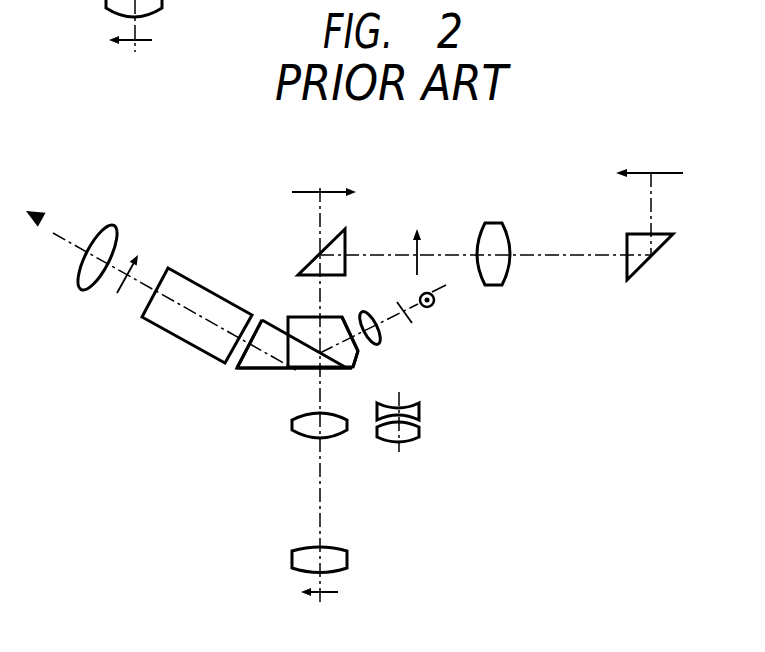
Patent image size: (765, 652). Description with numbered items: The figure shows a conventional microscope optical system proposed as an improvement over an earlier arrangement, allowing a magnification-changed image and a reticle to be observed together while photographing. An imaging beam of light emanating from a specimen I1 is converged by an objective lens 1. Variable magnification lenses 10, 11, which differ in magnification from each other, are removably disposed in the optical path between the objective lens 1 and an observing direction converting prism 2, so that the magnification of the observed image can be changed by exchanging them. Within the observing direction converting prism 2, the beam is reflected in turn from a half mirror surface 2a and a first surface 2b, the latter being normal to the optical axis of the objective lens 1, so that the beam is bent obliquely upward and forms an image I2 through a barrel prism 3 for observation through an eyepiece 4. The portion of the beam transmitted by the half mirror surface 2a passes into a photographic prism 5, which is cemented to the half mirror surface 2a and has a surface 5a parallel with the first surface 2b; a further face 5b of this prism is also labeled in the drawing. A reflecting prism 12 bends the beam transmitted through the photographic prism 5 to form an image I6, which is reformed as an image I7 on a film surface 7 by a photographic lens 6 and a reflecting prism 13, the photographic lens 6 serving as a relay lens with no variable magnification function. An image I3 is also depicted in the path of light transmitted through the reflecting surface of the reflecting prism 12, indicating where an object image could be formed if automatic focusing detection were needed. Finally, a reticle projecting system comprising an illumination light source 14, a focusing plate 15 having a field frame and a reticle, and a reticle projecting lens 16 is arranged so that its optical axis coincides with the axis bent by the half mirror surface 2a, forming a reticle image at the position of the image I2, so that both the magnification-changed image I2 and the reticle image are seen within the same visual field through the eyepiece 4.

The objective lens 1 is at (332, 547).
The observing direction converting prism 2 is at (273, 372).
The half mirror surface 2a is at (353, 371).
The first surface 2b is at (278, 372).
The barrel prism 3 is at (178, 330).
The eyepiece 4 is at (118, 228).
The photographic prism 5 is at (364, 330).
The surface 5a is at (335, 316).
The small face of prism 5 5b is at (360, 357).
The photographic lens 6 is at (500, 223).
The film surface 7 is at (652, 165).
The variable magnification lens 10 is at (335, 437).
The variable magnification lens 11 is at (432, 397).
The reflecting prism 12 is at (305, 268).
The reflecting prism 13 is at (637, 278).
The illumination light source 14 is at (434, 303).
The focusing plate 15 is at (412, 323).
The reticle projecting lens 16 is at (380, 341).
The specimen I1 is at (302, 592).
The image I2 is at (142, 255).
The image I3 is at (353, 192).
The image I6 is at (418, 229).
The image I7 is at (620, 172).